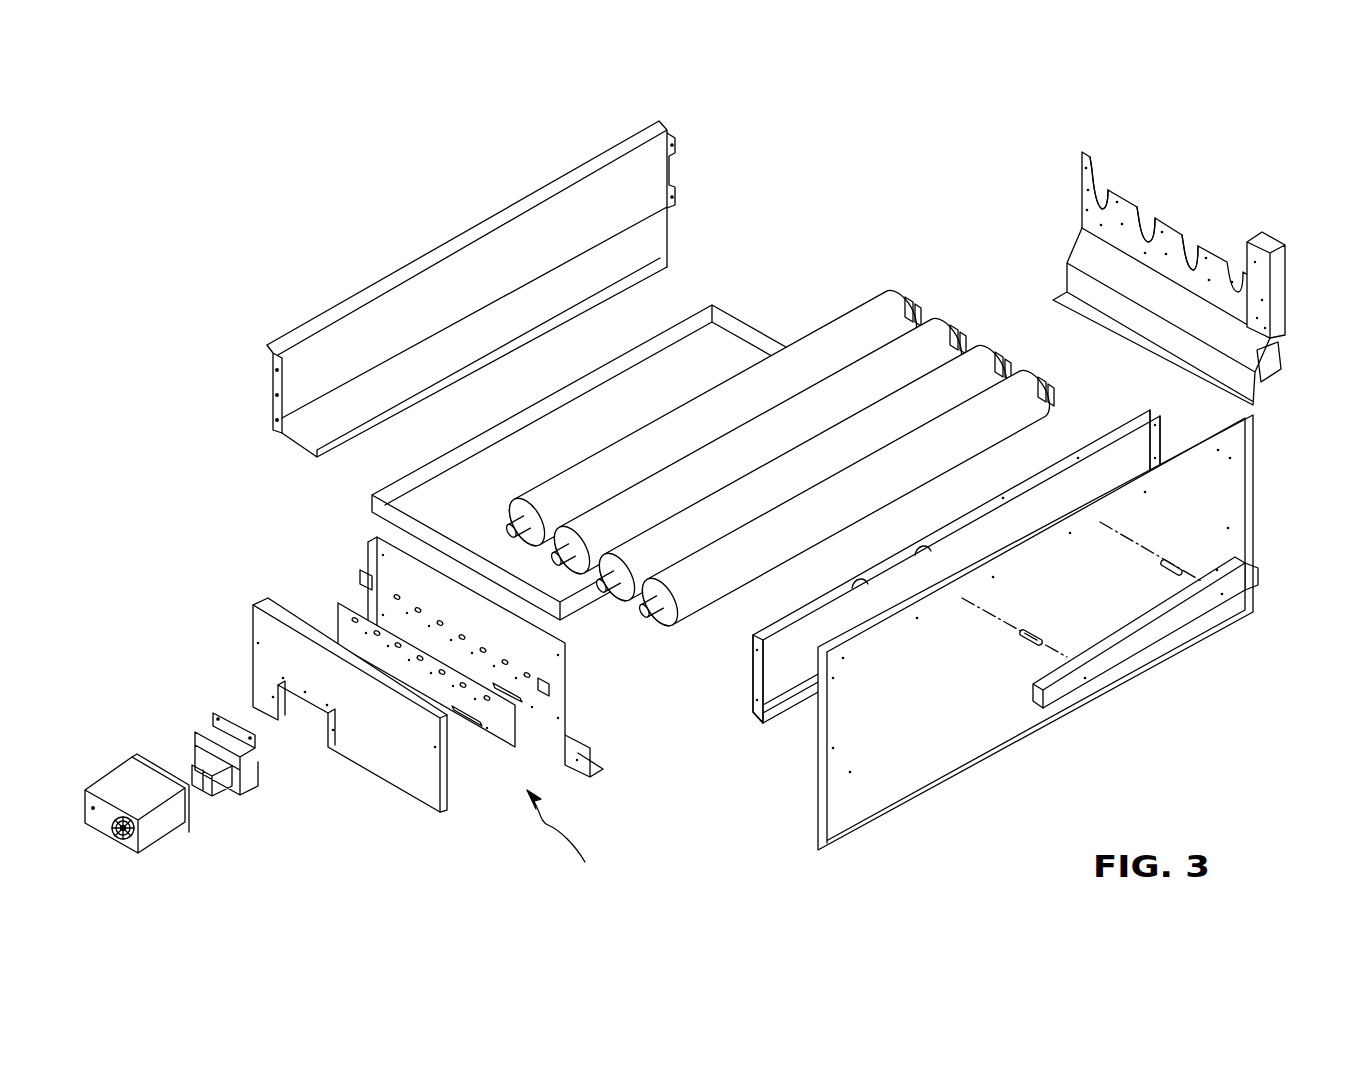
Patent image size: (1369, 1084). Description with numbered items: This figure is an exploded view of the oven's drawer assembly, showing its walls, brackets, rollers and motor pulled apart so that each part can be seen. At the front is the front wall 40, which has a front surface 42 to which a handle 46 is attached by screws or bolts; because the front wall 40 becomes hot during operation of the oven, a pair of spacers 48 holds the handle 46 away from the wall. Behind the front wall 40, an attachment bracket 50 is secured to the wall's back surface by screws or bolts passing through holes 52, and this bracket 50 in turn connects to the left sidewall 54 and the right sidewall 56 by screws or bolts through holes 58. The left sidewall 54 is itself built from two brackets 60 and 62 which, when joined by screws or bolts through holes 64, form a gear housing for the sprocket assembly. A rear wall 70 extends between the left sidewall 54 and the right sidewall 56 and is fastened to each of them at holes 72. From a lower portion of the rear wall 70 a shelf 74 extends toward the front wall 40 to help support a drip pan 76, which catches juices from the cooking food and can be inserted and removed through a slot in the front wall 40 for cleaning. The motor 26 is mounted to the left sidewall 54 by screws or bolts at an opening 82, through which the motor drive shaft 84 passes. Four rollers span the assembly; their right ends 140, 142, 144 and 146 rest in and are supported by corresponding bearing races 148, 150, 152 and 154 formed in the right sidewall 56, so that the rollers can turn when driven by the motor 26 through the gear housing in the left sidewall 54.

The motor 26 is at (192, 745).
The front wall 40 is at (1076, 632).
The front surface 42 is at (916, 707).
The handle 46 is at (1165, 632).
The spacers 48 is at (1152, 563).
The attachment bracket 50 is at (946, 555).
The holes 52 is at (868, 582).
The left sidewall 54 is at (568, 844).
The right sidewall 56 is at (1169, 258).
The holes 58 is at (753, 670).
The bracket 60 is at (475, 631).
The bracket 62 is at (350, 734).
The holes 64 is at (355, 545).
The rear wall 70 is at (477, 249).
The holes 72 is at (672, 138).
The shelf 74 is at (638, 243).
The drip pan 76 is at (633, 429).
The opening 82 is at (327, 742).
The motor drive shaft 84 is at (250, 730).
The right end 140 is at (900, 290).
The right end 142 is at (952, 320).
The right end 144 is at (1000, 342).
The right end 146 is at (1056, 391).
The bearing race 148 is at (1110, 192).
The bearing race 150 is at (1150, 238).
The bearing race 152 is at (1193, 265).
The bearing race 154 is at (1282, 281).